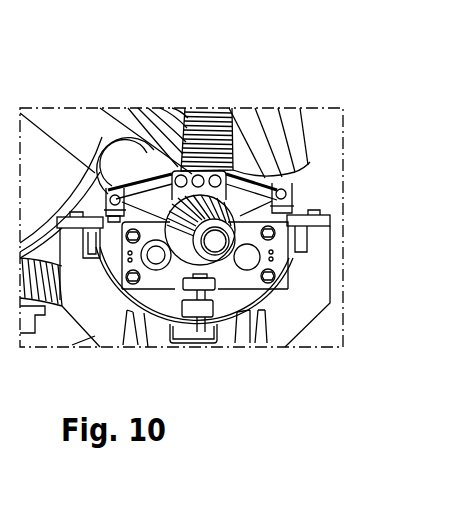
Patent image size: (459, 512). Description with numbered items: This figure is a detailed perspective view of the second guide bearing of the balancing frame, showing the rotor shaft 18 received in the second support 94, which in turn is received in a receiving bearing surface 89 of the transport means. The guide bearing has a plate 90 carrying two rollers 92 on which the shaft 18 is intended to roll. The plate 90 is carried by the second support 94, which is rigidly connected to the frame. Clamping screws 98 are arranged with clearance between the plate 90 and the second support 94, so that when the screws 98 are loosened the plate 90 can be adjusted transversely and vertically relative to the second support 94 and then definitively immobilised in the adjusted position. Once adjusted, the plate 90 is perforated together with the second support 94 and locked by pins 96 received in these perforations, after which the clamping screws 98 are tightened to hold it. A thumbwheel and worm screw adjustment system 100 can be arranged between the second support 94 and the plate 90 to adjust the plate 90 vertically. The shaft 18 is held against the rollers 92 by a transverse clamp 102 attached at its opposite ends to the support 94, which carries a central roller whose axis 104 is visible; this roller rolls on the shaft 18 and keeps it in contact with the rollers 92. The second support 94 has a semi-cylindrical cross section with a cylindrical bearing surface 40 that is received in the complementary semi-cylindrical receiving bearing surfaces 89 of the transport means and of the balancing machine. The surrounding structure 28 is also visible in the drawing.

The shaft 18 is at (77, 128).
The tube 28 is at (297, 170).
The cylindrical bearing surface 40 is at (240, 330).
The receiving bearing surfaces 89 is at (113, 280).
The plate 90 is at (242, 283).
The rollers 92 is at (147, 335).
The second support 94 is at (167, 300).
The pins 96 is at (287, 347).
The clamping screws 98 is at (272, 262).
The thumbwheel and worm screw adjustment system 100 is at (183, 307).
The transverse clamp 102 is at (130, 177).
The axis 104 is at (198, 178).